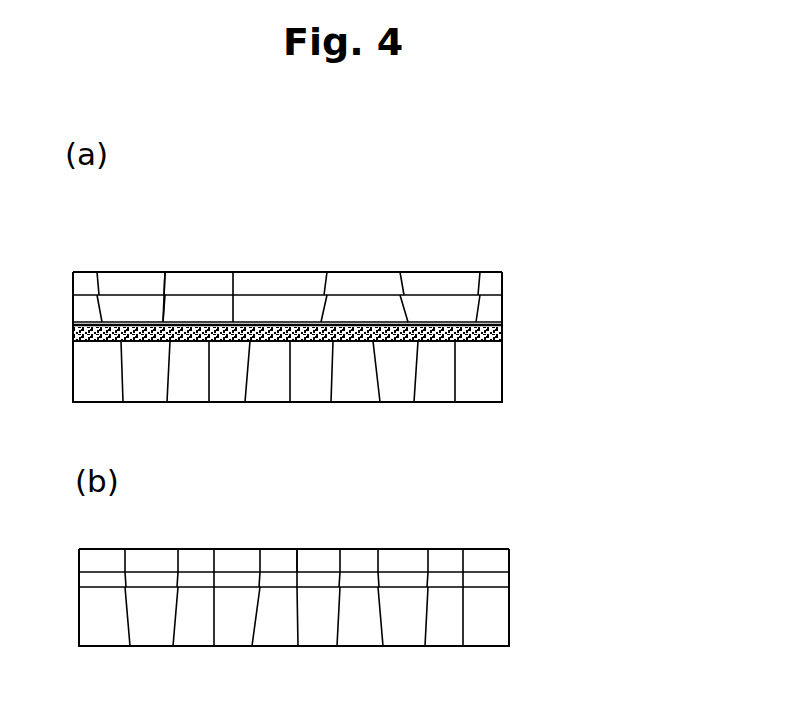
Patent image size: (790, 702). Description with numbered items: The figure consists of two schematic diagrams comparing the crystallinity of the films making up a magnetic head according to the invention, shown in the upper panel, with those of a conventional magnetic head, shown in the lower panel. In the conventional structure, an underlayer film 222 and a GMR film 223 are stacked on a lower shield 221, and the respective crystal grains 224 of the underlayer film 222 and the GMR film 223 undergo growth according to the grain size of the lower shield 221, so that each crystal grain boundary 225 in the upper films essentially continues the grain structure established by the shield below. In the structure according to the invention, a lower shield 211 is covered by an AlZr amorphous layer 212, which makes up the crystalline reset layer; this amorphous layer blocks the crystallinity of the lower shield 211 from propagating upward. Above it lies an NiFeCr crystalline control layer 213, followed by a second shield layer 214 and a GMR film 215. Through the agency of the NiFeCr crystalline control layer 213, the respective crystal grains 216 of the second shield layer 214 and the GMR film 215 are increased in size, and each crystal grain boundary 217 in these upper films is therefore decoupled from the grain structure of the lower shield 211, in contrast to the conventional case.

The lower shield 211 is at (493, 363).
The AlZr amorphous layer 212 is at (503, 334).
The NiFeCr crystalline control layer 213 is at (502, 318).
The second shield layer 214 is at (488, 298).
The GMR film 215 is at (463, 280).
The crystal grains 216 is at (198, 268).
The crystal grain boundary 217 is at (165, 278).
The lower shield 221 is at (493, 608).
The underlayer film 222 is at (500, 577).
The GMR film 223 is at (492, 553).
The crystal grains 224 is at (352, 560).
The crystal grain boundary 225 is at (297, 560).